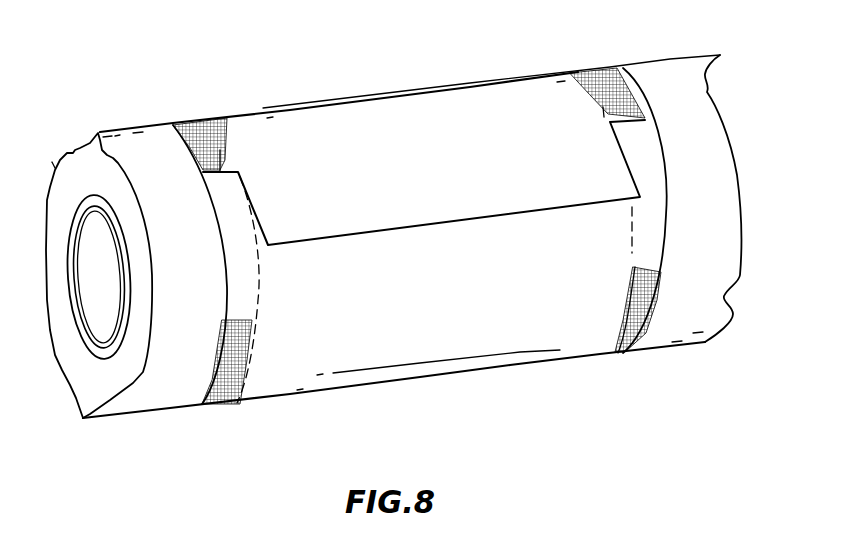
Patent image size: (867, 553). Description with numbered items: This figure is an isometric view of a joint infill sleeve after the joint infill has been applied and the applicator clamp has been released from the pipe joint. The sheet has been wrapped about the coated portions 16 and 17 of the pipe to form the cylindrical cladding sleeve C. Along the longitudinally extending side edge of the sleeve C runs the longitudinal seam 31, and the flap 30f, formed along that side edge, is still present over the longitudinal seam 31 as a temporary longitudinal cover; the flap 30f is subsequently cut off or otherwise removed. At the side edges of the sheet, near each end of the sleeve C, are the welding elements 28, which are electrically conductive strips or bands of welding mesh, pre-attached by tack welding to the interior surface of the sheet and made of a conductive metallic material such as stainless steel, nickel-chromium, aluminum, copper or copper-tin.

The coated portion 16 is at (99, 131).
The coated portion 17 is at (644, 66).
The welding elements 28 is at (236, 397).
The flap 30f is at (437, 205).
The longitudinal seam 31 is at (219, 166).
The sleeve C is at (441, 354).